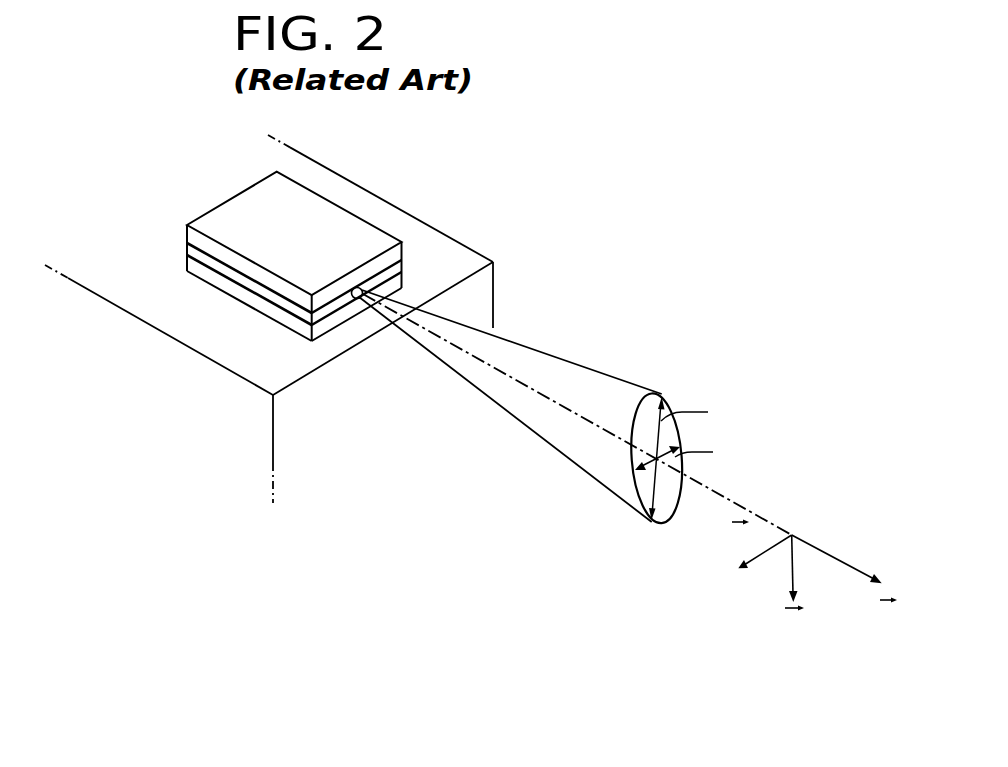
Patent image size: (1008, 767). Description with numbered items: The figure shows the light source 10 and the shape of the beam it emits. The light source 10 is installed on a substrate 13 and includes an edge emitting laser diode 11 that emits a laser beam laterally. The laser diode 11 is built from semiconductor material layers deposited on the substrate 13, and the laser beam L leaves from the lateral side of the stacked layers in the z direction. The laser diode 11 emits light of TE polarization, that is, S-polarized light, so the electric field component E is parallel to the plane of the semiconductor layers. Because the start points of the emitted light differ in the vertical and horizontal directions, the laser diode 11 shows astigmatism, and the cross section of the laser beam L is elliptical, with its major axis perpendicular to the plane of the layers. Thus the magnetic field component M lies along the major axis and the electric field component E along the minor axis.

The light source 10 is at (352, 200).
The edge emitting laser diode 11 is at (400, 253).
The substrate 13 is at (464, 258).
The laser beam L is at (595, 368).